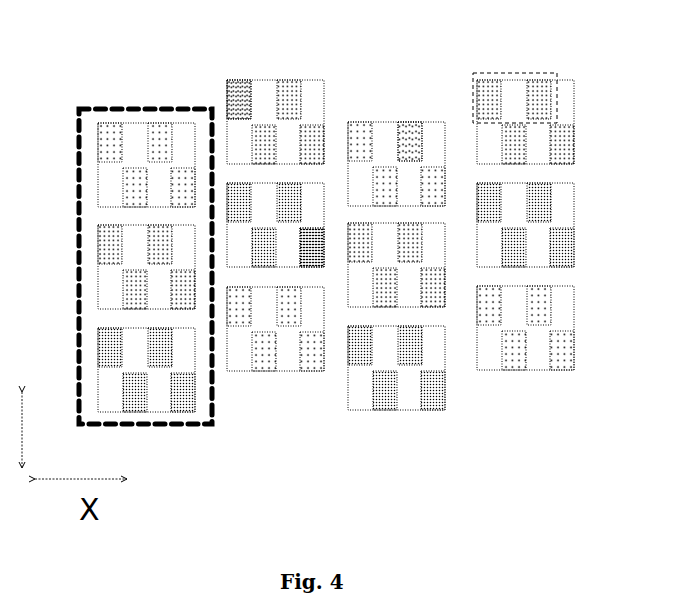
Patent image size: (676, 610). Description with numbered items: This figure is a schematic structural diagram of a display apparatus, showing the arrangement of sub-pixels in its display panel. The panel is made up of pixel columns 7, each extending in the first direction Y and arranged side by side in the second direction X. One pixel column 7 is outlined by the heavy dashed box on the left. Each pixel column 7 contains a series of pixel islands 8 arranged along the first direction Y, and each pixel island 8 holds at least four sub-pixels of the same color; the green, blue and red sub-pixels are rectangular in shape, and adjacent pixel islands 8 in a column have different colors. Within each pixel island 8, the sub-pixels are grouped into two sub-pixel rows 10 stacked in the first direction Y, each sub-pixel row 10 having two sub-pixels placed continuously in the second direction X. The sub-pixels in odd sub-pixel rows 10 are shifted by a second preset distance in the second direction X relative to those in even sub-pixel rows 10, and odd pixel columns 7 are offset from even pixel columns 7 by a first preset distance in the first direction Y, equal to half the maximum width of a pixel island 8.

The pixel column 7 is at (181, 108).
The pixel island 8 is at (139, 122).
The sub-pixel row 10 is at (515, 73).